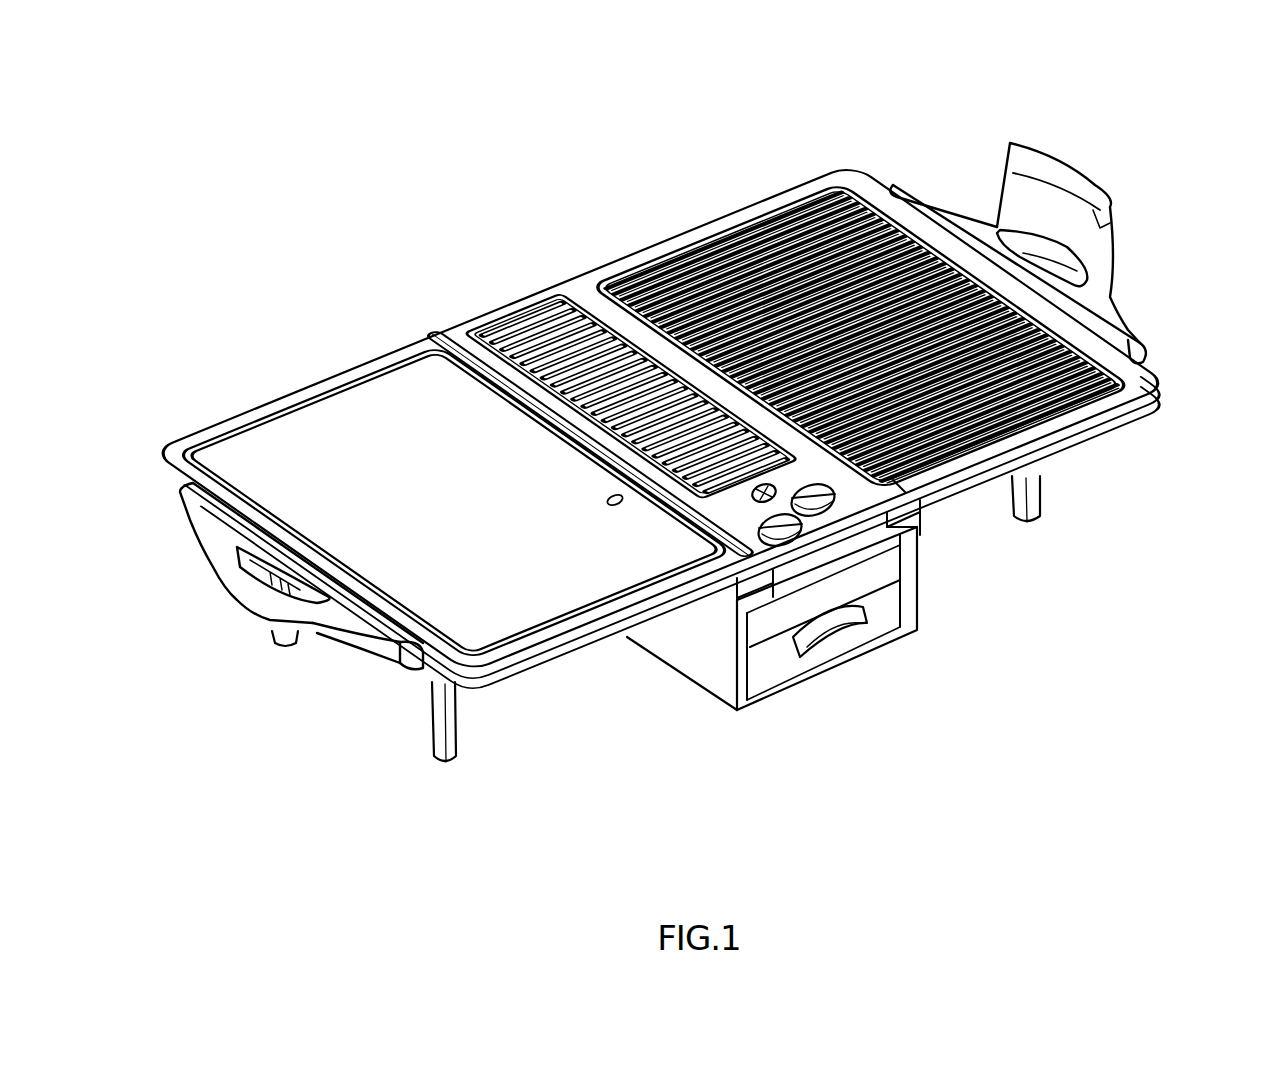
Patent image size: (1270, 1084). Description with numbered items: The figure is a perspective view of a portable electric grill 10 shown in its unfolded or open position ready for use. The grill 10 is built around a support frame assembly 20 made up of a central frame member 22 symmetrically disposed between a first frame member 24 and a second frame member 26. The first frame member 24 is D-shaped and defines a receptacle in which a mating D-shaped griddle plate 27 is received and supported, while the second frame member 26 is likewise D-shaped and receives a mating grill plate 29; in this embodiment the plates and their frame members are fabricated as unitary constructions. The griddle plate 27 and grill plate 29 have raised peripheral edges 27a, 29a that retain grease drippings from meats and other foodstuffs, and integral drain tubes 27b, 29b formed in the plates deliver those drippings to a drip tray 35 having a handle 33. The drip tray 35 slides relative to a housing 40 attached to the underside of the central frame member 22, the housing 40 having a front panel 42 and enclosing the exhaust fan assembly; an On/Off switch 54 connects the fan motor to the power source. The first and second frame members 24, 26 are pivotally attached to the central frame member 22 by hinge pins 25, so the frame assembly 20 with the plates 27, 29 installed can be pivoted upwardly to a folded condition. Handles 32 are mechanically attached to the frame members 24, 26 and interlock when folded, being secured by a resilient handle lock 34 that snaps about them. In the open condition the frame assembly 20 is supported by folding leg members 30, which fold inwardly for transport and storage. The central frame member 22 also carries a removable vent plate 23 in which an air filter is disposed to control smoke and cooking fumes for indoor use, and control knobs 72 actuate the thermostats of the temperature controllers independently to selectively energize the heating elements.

The portable electric grill 10 is at (410, 141).
The support frame assembly 20 is at (582, 240).
The central frame member 22 is at (482, 318).
The removable vent plate 23 is at (540, 318).
The first frame member 24 is at (347, 372).
The hinge pins 25 is at (733, 600).
The second frame member 26 is at (1152, 384).
The griddle plate 27 is at (453, 461).
The raised peripheral edge 27a is at (206, 466).
The drain tube 27b is at (612, 504).
The grill plate 29 is at (861, 306).
The raised peripheral edge 29a is at (773, 206).
The drain tube 29b is at (906, 491).
The folding leg members 30 is at (448, 752).
The handles 32 is at (1116, 325).
The handle 33 is at (803, 654).
The resilient handle lock 34 is at (1096, 186).
The drip tray 35 is at (830, 661).
The housing 40 is at (847, 675).
The front panel 42 is at (903, 557).
The On/Off switch 54 is at (910, 634).
The control knobs 72 is at (787, 541).